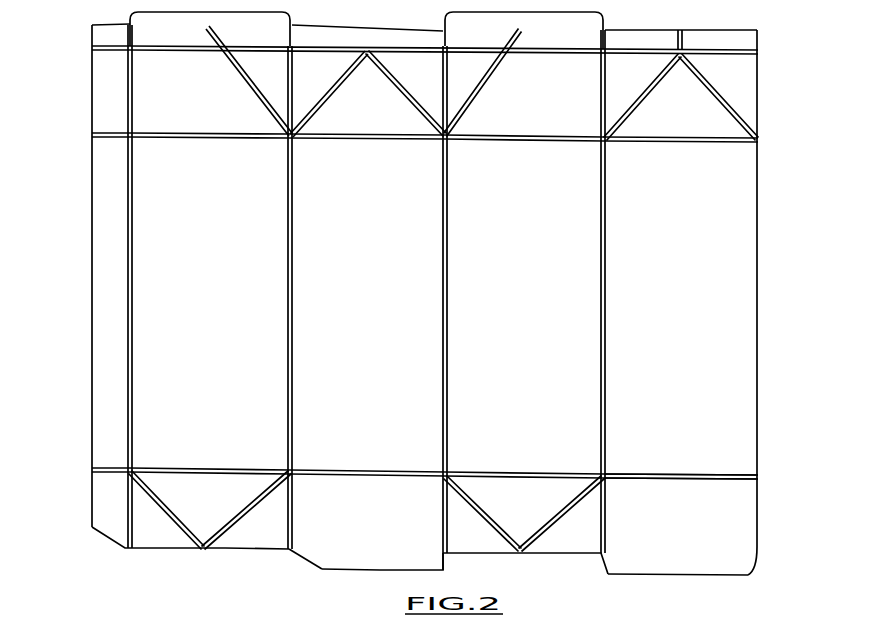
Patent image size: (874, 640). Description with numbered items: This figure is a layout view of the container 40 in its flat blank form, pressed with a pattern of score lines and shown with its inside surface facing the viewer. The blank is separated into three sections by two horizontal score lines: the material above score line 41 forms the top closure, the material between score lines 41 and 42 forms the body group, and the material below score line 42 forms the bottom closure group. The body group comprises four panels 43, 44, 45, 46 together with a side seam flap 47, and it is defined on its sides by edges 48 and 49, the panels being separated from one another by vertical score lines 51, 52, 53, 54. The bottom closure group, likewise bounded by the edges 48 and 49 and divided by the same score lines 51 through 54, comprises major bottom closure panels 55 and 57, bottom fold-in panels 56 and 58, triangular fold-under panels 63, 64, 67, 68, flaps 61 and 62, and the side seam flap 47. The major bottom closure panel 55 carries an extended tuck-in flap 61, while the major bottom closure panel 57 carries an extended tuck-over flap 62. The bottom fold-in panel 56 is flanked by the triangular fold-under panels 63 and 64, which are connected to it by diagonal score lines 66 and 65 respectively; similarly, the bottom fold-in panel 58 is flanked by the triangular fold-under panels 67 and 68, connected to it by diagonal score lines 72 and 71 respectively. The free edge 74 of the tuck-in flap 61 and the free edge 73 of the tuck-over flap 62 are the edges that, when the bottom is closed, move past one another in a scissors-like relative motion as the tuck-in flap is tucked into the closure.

The container 40 is at (88, 177).
The score line 41 is at (250, 139).
The score line 42 is at (449, 532).
The panel 43 is at (703, 348).
The panel 44 is at (495, 347).
The panel 45 is at (333, 345).
The panel 46 is at (187, 357).
The side seam flap 47 is at (107, 338).
The edge 48 is at (757, 307).
The edge 49 is at (92, 235).
The score line 51 is at (603, 232).
The score line 52 is at (445, 255).
The score line 53 is at (292, 258).
The score line 54 is at (132, 265).
The major bottom closure panel 55 is at (738, 532).
The bottom fold-in panel 56 is at (523, 530).
The major bottom closure panel 57 is at (350, 538).
The bottom fold-in panel 58 is at (208, 527).
The tuck-in flap 61 is at (740, 567).
The tuck-over flap 62 is at (417, 563).
The triangular fold-under panel 63 is at (582, 543).
The triangular fold-under panel 64 is at (475, 537).
The score line 65 is at (495, 522).
The score line 66 is at (555, 518).
The triangular fold-under panel 67 is at (272, 538).
The triangular fold-under panel 68 is at (150, 535).
The score line 71 is at (175, 512).
The score line 72 is at (232, 518).
The free edge 73 is at (355, 572).
The free edge 74 is at (682, 578).